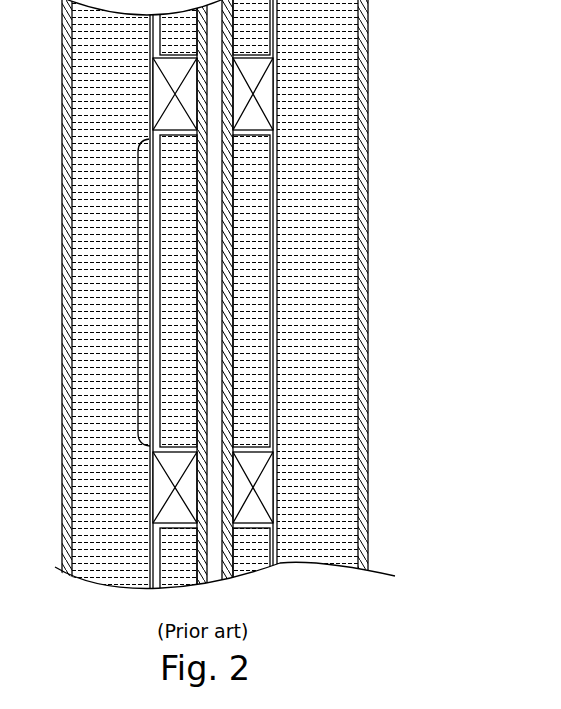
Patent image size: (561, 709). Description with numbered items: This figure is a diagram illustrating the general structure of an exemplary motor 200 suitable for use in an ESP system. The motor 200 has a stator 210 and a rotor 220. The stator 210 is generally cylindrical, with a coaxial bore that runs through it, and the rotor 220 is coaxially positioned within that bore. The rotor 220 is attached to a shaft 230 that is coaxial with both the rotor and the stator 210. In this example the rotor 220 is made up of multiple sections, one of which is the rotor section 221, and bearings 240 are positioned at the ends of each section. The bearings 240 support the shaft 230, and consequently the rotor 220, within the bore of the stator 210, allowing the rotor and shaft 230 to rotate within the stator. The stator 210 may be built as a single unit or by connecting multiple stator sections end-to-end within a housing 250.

The motor 200 is at (239, 304).
The stator 210 is at (368, 50).
The rotor 220 is at (270, 273).
The rotor section 221 is at (137, 292).
The shaft 230 is at (236, 562).
The bearing 240 is at (277, 105).
The housing 250 is at (367, 383).